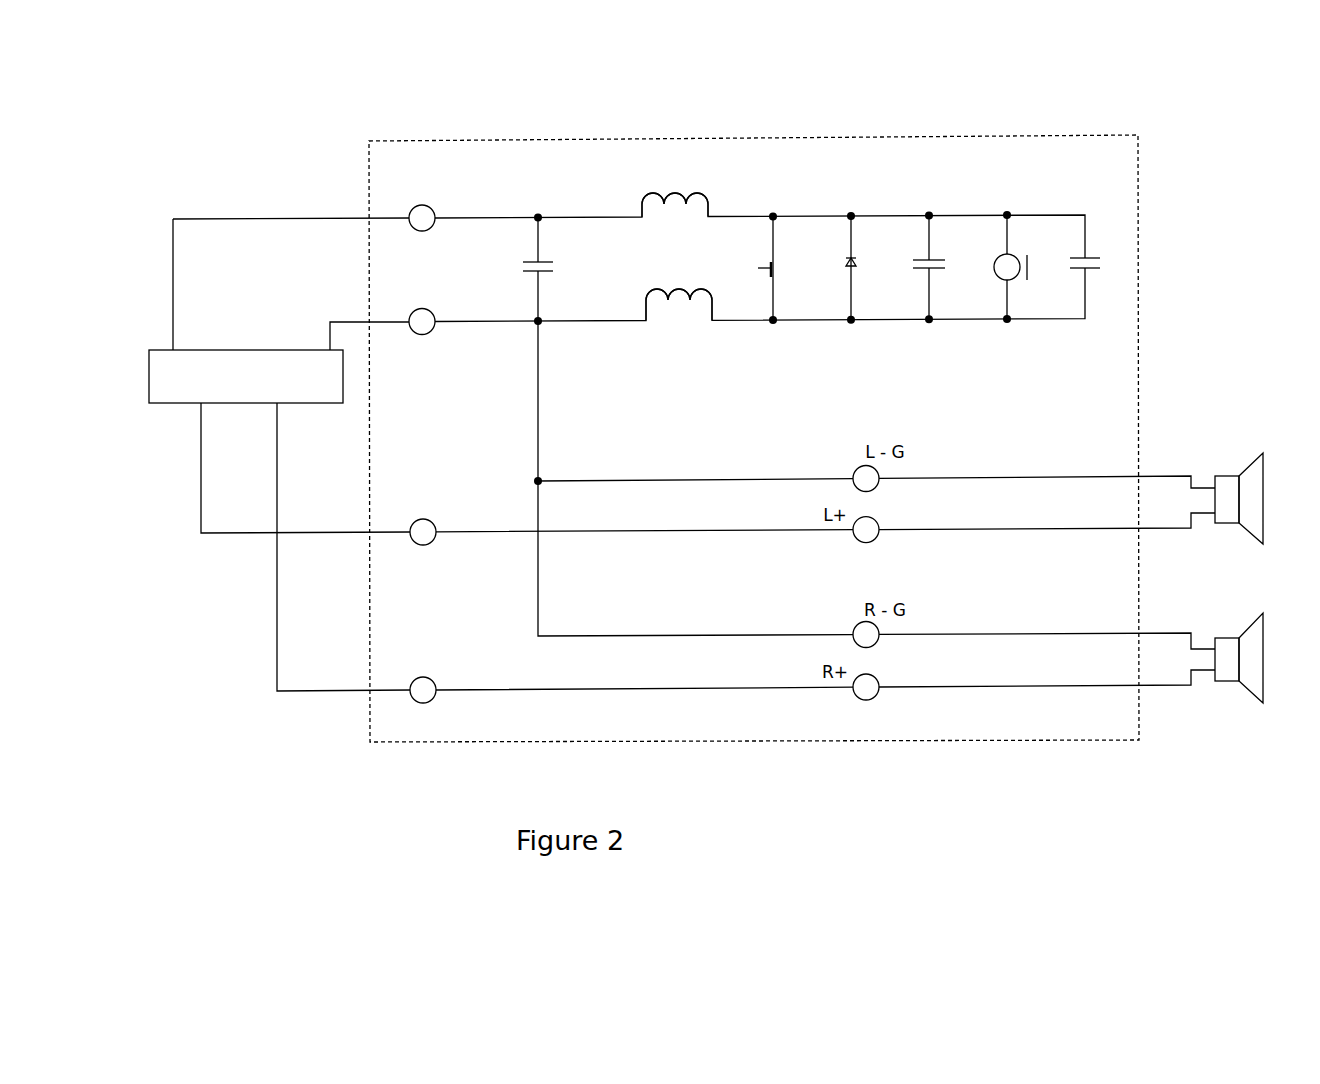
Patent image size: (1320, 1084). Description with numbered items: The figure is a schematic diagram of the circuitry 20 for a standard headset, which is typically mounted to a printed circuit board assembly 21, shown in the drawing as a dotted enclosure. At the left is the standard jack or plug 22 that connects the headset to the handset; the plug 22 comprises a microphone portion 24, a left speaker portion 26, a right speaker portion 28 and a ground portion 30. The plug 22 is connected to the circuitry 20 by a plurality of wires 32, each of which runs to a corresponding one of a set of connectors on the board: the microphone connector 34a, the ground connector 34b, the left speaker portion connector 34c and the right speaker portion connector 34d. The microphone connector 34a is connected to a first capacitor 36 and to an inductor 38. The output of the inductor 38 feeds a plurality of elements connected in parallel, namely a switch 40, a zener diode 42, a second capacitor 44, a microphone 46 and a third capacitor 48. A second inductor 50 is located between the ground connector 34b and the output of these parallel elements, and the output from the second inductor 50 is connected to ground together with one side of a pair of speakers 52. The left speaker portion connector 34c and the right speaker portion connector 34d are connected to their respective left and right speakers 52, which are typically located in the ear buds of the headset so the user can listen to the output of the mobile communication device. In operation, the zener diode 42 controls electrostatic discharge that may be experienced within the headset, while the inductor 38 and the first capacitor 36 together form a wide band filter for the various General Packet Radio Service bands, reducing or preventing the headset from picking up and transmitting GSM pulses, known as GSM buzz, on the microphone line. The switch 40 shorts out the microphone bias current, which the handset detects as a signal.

The circuitry 20 is at (311, 170).
The printed circuit board assembly 21 is at (1085, 162).
The plug 22 is at (234, 306).
The microphone portion 24 is at (172, 350).
The left speaker portion 26 is at (183, 392).
The right speaker portion 28 is at (270, 393).
The ground portion 30 is at (305, 350).
The wires 32 is at (341, 218).
The microphone connector 34a is at (422, 218).
The ground connector 34b is at (436, 320).
The left speaker portion connector 34c is at (423, 532).
The right speaker portion connector 34d is at (423, 690).
The first capacitor 36 is at (556, 280).
The inductor 38 is at (675, 221).
The switch 40 is at (775, 280).
The zener diode 42 is at (851, 267).
The second capacitor 44 is at (929, 270).
The microphone 46 is at (1007, 268).
The third capacitor 48 is at (1085, 272).
The second inductor 50 is at (670, 326).
The speakers 52 is at (1250, 500).